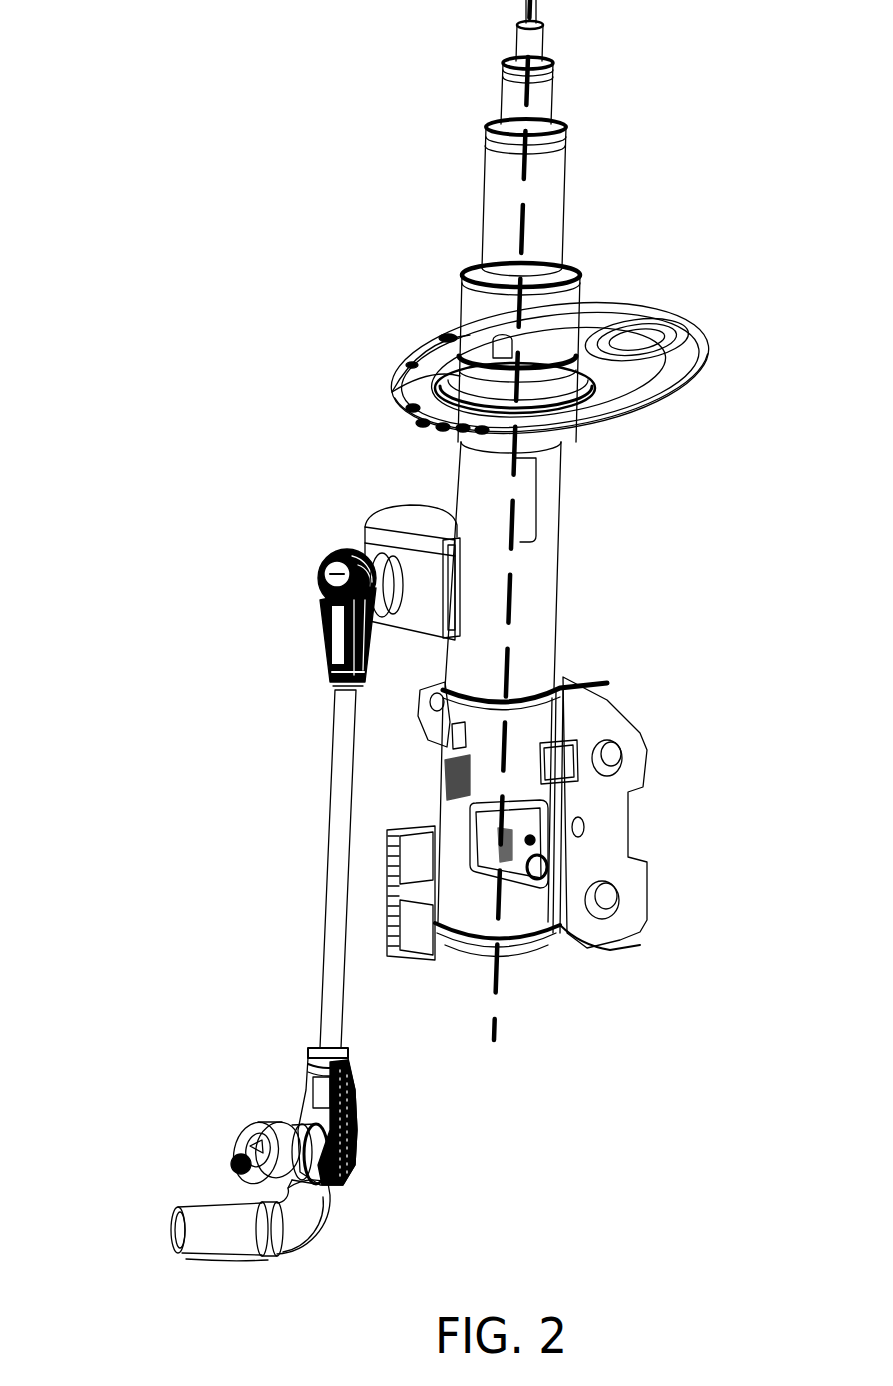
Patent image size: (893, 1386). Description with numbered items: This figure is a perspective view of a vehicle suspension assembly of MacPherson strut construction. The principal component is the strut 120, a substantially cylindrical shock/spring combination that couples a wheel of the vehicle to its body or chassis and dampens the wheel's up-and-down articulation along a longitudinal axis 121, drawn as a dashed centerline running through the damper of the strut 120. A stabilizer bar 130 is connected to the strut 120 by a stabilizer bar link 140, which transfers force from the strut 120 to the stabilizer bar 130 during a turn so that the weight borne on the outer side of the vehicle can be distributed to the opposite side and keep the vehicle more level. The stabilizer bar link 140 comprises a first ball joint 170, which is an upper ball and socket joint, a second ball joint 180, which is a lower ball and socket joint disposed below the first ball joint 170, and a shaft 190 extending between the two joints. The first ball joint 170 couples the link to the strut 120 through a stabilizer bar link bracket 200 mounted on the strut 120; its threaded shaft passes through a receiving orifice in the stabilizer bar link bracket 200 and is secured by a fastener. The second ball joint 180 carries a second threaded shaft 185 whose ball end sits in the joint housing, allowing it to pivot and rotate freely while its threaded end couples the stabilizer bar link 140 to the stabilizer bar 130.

The strut 120 is at (543, 585).
The longitudinal axis 121 is at (497, 1036).
The stabilizer bar 130 is at (205, 1215).
The stabilizer bar link 140 is at (314, 780).
The first ball joint 170 is at (342, 582).
The second ball joint 180 is at (357, 1150).
The second threaded shaft 185 is at (247, 1150).
The shaft 190 is at (335, 960).
The stabilizer bar link bracket 200 is at (393, 528).